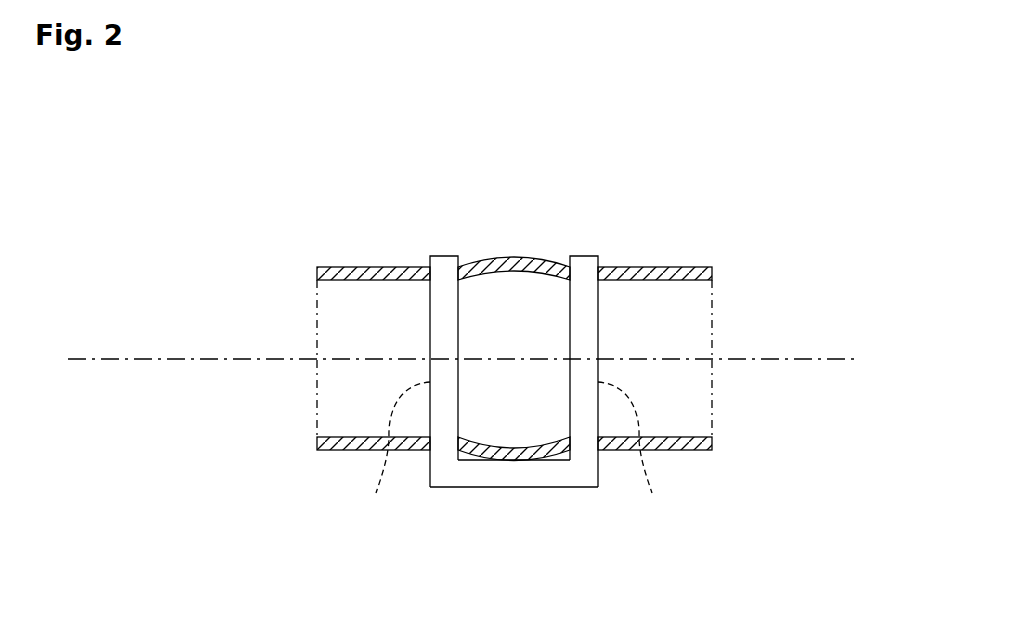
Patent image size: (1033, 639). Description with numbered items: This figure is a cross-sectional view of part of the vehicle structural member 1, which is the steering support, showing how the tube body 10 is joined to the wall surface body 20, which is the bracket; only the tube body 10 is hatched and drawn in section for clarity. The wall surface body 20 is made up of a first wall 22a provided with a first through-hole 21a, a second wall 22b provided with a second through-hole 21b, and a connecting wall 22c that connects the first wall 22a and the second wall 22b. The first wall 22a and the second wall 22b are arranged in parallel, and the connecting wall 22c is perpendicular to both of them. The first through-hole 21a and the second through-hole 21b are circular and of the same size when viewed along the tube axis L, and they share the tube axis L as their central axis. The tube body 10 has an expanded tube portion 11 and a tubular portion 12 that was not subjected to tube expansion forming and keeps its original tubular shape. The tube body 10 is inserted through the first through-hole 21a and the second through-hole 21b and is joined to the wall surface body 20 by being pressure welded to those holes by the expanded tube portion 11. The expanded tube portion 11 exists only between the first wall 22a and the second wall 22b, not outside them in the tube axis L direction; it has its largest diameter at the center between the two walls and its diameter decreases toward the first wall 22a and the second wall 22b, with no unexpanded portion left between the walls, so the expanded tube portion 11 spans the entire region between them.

The vehicle structural member 1 is at (667, 181).
The tube axis L is at (462, 334).
The tube body 10 is at (316, 267).
The expanded tube portion 11 is at (514, 258).
The tubular portion 12 is at (372, 267).
The wall surface body 20 is at (430, 333).
The first through-hole 21a is at (385, 457).
The second through-hole 21b is at (640, 458).
The first wall 22a is at (430, 488).
The second wall 22b is at (598, 487).
The connecting wall 22c is at (510, 488).